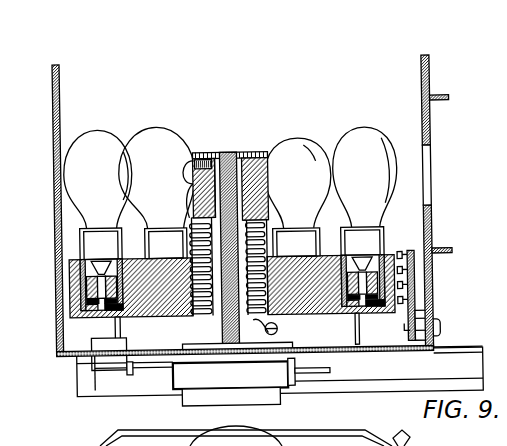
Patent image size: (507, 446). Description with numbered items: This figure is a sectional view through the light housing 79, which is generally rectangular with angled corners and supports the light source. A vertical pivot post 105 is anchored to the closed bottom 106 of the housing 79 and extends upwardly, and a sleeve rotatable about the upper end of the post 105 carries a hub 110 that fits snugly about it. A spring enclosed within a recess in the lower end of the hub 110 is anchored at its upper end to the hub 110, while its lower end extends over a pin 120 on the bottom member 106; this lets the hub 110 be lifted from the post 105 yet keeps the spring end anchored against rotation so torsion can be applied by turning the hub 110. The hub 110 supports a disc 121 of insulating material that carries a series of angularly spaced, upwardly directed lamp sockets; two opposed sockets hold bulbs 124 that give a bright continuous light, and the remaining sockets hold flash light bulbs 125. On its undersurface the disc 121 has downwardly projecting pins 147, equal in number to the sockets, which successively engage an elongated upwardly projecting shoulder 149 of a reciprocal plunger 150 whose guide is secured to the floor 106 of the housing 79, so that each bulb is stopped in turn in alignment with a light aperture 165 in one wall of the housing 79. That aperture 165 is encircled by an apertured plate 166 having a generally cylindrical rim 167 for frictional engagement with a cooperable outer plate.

The flash light bulb 125 is at (147, 147).
The light bulb 124 is at (300, 158).
The hub 110 is at (252, 150).
The vertical pivot post 105 is at (270, 150).
The cylindrical rim 167 is at (445, 97).
The apertured plate 166 is at (432, 121).
The light aperture 165 is at (432, 170).
The housing 79 is at (432, 302).
The disc 121 is at (85, 322).
The pins 147 is at (120, 330).
The pin 120 is at (267, 328).
The shoulder 149 is at (72, 362).
The reciprocal plunger 150 is at (112, 384).
The closed bottom 106 is at (384, 348).